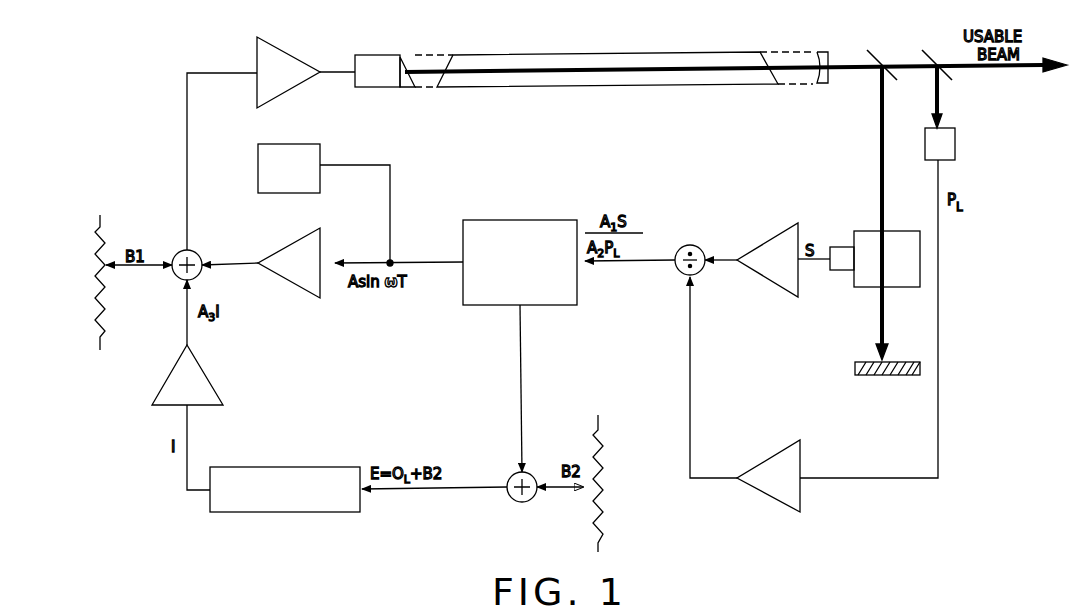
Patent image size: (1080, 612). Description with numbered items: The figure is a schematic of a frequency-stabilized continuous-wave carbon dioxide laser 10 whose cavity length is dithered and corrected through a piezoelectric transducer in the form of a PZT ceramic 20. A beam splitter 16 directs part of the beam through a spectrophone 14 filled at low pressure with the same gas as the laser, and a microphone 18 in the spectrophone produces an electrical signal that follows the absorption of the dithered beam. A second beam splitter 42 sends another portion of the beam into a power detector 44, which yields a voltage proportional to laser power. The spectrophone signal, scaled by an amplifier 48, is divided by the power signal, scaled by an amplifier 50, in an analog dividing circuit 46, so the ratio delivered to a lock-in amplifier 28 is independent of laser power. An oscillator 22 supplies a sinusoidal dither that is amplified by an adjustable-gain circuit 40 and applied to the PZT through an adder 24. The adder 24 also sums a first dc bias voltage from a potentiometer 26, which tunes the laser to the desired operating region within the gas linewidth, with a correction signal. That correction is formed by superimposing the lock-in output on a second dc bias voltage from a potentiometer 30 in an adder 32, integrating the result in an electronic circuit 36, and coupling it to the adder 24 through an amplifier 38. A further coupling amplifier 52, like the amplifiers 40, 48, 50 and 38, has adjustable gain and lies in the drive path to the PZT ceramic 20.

The laser 10 is at (620, 44).
The spectrophone 14 is at (863, 299).
The beam splitter 16 is at (878, 50).
The microphone 18 is at (842, 246).
The PZT ceramic 20 is at (376, 55).
The oscillator 22 is at (322, 153).
The adder 24 is at (198, 256).
The potentiometer 26 is at (96, 290).
The lock-in amplifier 28 is at (500, 220).
The potentiometer 30 is at (615, 469).
The adder 32 is at (528, 500).
The electronic circuit 36 is at (270, 513).
The amplifier 38 is at (211, 373).
The circuit 40 is at (291, 285).
The beam splitter 42 is at (938, 50).
The power detector 44 is at (956, 140).
The analog dividing circuit 46 is at (678, 272).
The amplifier 48 is at (757, 250).
The amplifier 50 is at (764, 491).
The coupling amplifier 52 is at (287, 50).